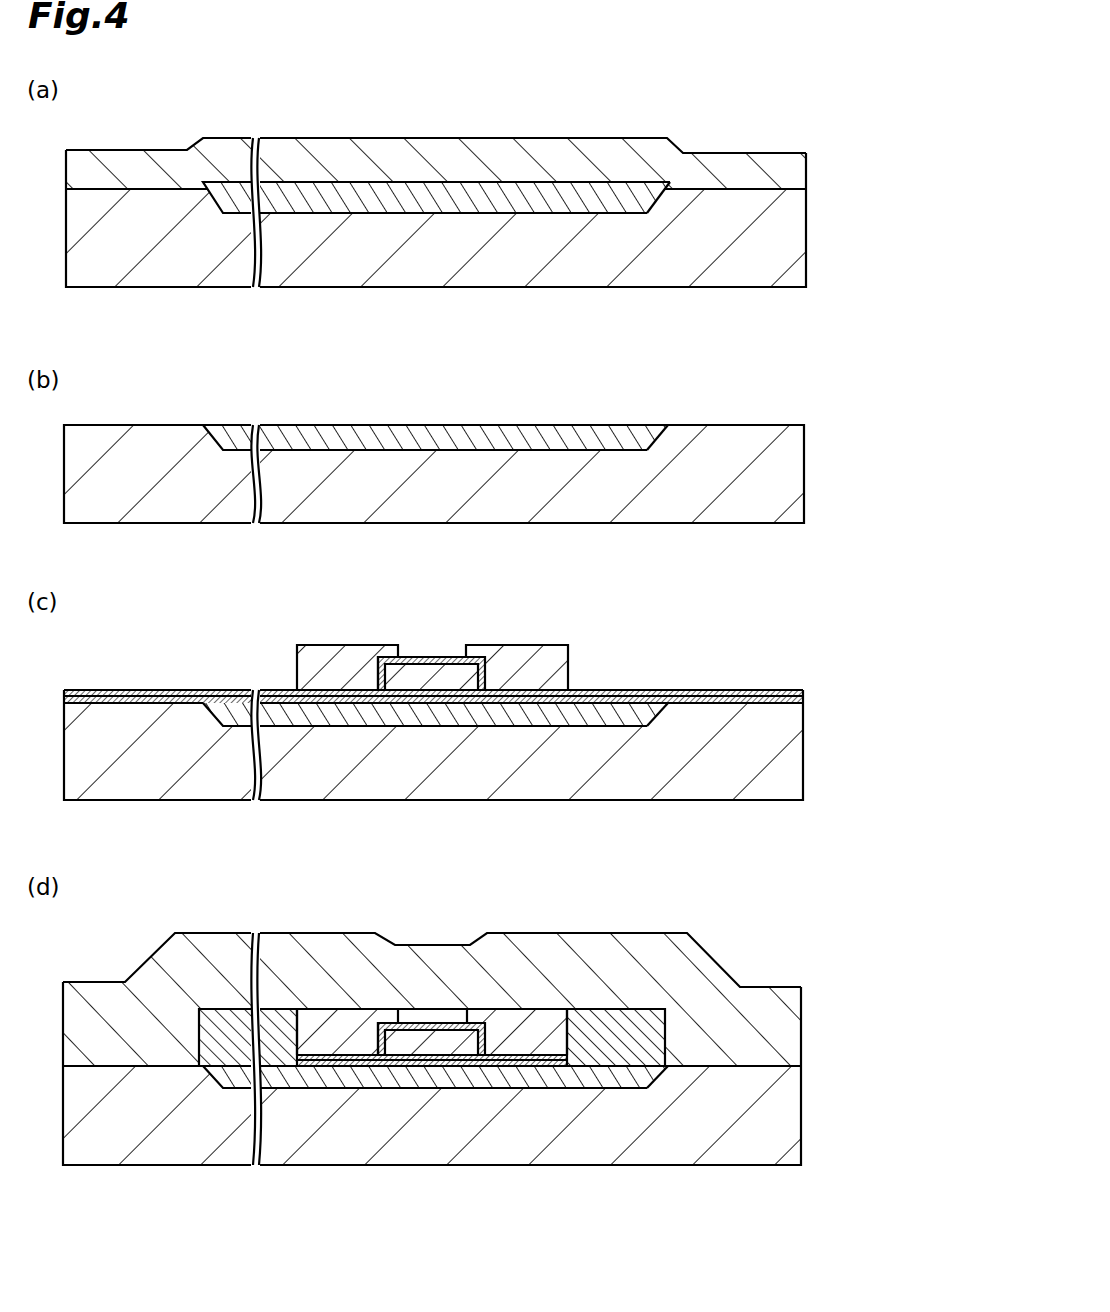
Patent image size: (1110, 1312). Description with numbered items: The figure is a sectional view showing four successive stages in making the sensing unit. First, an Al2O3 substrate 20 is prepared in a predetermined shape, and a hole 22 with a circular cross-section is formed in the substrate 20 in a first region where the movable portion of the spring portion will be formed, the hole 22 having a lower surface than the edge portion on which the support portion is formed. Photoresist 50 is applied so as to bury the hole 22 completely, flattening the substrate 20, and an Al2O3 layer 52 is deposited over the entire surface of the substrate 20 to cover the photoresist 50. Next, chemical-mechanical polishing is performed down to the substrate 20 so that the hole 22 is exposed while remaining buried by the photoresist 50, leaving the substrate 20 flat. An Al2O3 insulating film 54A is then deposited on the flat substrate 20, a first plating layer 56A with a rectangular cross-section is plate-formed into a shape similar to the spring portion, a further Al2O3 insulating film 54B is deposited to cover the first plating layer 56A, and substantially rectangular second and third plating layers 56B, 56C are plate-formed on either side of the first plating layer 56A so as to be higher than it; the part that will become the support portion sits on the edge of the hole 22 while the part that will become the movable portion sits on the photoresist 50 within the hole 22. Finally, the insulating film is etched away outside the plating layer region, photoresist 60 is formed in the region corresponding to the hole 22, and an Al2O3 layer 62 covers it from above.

The substrate 20 is at (668, 270).
The hole 22 is at (652, 193).
The photoresist 50 is at (509, 200).
The Al2O3 layer 52 is at (550, 143).
The insulating film 54A is at (777, 700).
The insulating film 54B is at (777, 692).
The first plating layer 56A is at (427, 673).
The second plating layer 56B is at (337, 655).
The third plating layer 56C is at (530, 653).
The photoresist 60 is at (662, 1028).
The Al2O3 layer 62 is at (772, 992).